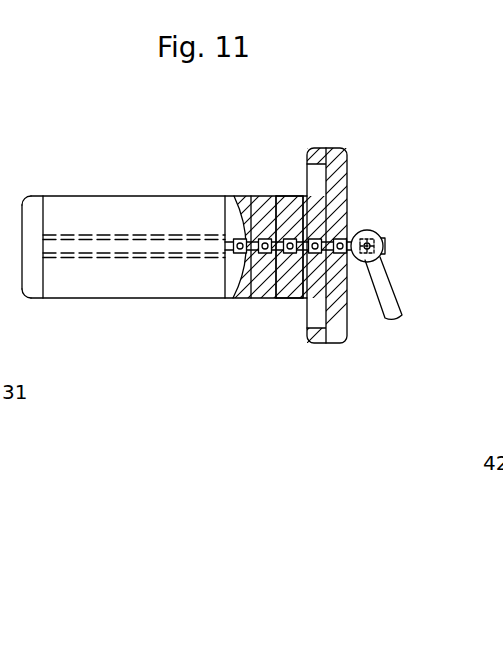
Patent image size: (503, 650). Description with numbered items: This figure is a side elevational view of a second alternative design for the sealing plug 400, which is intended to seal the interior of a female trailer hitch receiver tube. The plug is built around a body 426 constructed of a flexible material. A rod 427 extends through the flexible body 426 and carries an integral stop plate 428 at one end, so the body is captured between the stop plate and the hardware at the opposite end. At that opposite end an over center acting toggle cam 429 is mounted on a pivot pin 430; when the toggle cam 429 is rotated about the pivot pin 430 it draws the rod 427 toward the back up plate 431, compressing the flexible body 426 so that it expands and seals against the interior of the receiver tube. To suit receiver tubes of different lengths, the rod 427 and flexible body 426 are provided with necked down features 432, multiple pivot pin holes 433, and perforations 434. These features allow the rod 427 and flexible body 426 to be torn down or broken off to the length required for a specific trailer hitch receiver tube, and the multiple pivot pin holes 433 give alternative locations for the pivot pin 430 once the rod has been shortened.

The sealing plug 400 is at (153, 405).
The body 426 is at (97, 213).
The rod 427 is at (97, 247).
The stop plate 428 is at (22, 196).
The over center acting toggle cam 429 is at (370, 222).
The pivot pin 430 is at (365, 258).
The back up plate 431 is at (335, 140).
The necked down features 432 is at (252, 232).
The pivot pin holes 433 is at (265, 250).
The perforations 434 is at (300, 302).